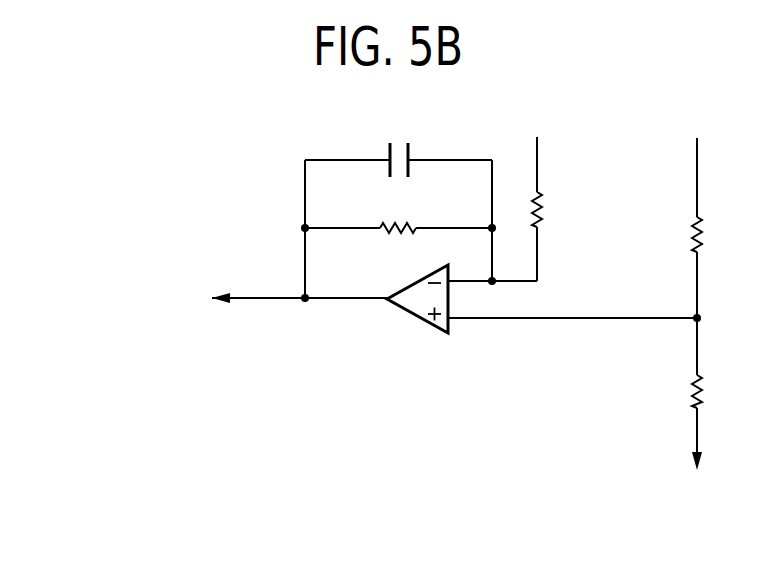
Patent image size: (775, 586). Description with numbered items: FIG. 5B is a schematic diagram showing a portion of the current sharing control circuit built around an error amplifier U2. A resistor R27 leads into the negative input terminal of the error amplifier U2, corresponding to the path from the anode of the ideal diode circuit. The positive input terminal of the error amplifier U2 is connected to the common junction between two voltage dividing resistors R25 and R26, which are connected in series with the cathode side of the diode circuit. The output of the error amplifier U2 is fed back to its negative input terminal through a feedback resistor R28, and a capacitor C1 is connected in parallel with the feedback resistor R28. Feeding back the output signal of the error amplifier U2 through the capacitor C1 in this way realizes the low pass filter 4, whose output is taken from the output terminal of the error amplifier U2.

The capacitor C1 is at (398, 141).
The feedback resistor R28 is at (398, 210).
The error amplifier U2 is at (417, 318).
The resistor R27 is at (565, 209).
The voltage dividing resistor R25 is at (727, 228).
The voltage dividing resistor R26 is at (727, 394).
The low pass filter 4 is at (146, 301).